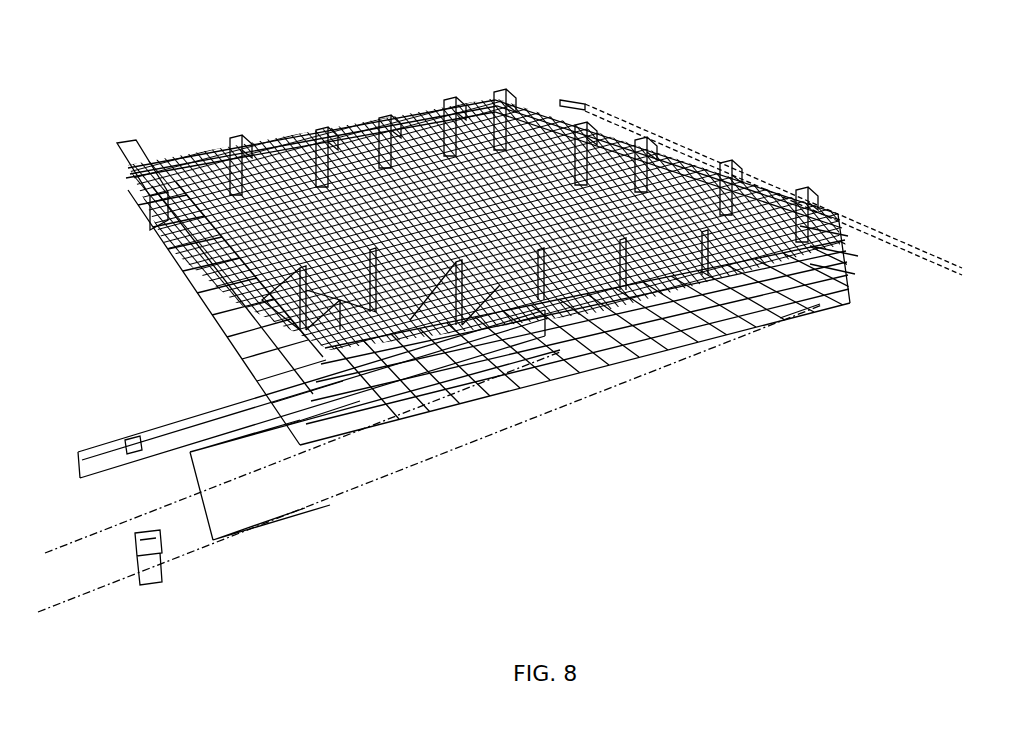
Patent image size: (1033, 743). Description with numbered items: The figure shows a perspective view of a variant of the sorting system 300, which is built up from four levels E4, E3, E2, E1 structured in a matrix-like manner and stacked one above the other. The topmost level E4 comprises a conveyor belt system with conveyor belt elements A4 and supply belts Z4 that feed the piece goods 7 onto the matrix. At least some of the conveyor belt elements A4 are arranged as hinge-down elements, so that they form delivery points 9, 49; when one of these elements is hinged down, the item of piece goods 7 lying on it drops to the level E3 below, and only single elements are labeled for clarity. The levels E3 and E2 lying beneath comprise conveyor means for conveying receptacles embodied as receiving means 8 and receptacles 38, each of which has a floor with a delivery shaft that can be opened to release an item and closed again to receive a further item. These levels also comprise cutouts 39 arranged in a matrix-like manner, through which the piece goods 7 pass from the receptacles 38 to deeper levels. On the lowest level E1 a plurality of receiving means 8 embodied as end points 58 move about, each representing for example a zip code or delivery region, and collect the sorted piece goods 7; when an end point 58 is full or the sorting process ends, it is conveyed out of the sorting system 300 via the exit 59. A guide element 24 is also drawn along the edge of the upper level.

The sorting system 300 is at (849, 49).
The receiving means 8 is at (488, 284).
The receptacle 38 is at (290, 195).
The delivery point 9 is at (513, 313).
The cutout 39 is at (357, 262).
The conveyor belt element A4 is at (513, 277).
The hinge-down delivery point 49 is at (573, 134).
The supply belt Z4 is at (578, 103).
The guide rail 24 is at (880, 248).
The topmost level E4 is at (845, 232).
The level E3 is at (860, 256).
The level E2 is at (852, 275).
The lowest level E1 is at (818, 305).
The piece goods 7 is at (134, 440).
The exit 59 is at (62, 556).
The end point 58 is at (157, 581).